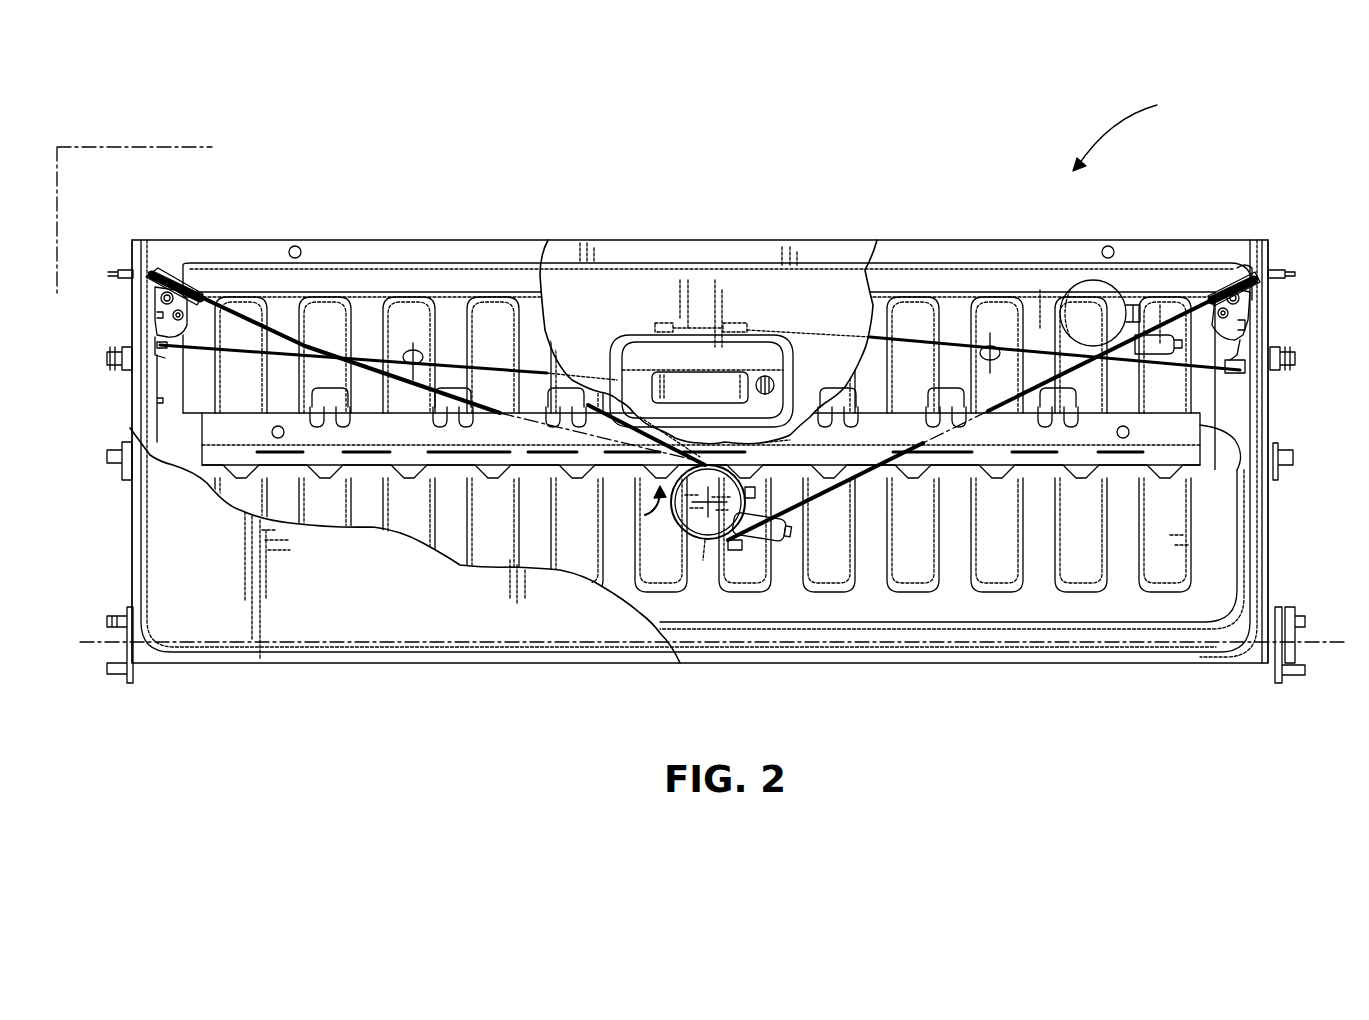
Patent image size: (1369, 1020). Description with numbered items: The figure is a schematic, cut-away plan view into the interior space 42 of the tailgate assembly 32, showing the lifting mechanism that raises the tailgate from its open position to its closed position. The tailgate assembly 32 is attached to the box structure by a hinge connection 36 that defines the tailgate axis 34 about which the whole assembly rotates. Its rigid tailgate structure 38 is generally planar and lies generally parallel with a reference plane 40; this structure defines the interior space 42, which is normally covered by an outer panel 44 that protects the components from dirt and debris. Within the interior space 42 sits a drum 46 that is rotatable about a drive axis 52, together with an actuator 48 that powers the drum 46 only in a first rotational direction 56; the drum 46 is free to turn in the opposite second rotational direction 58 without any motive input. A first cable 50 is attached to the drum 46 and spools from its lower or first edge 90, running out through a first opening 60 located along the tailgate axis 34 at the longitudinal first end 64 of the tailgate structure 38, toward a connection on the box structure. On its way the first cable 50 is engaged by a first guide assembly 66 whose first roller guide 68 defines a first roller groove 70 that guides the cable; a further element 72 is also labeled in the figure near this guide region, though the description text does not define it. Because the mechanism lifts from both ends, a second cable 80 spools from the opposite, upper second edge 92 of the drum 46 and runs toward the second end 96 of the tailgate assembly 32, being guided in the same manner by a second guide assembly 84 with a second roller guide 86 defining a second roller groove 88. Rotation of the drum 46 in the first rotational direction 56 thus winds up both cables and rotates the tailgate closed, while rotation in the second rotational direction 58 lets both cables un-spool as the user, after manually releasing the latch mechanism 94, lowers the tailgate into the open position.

The tailgate assembly 32 is at (701, 379).
The tailgate axis 34 is at (90, 643).
The hinge connection 36 is at (117, 628).
The tailgate structure 38 is at (865, 603).
The reference plane 40 is at (107, 147).
The interior space 42 is at (742, 557).
The outer panel 44 is at (630, 298).
The drum 46 is at (692, 520).
The actuator 48 is at (781, 590).
The first cable 50 is at (880, 477).
The drive axis 52 is at (748, 472).
The first rotational direction 56 is at (645, 515).
The second rotational direction 58 is at (868, 335).
The first opening 60 is at (1252, 268).
The first end 64 is at (1270, 495).
The first guide assembly 66 is at (1231, 282).
The first roller guide 68 is at (1248, 300).
The first roller groove 70 is at (1242, 320).
The right latch rod 72 is at (1245, 345).
The second cable 80 is at (308, 350).
The second guide assembly 84 is at (182, 281).
The second roller guide 86 is at (172, 272).
The second roller groove 88 is at (150, 293).
The first edge 90 is at (706, 543).
The second edge 92 is at (673, 457).
The latch mechanism 94 is at (705, 346).
The second end 96 is at (132, 503).